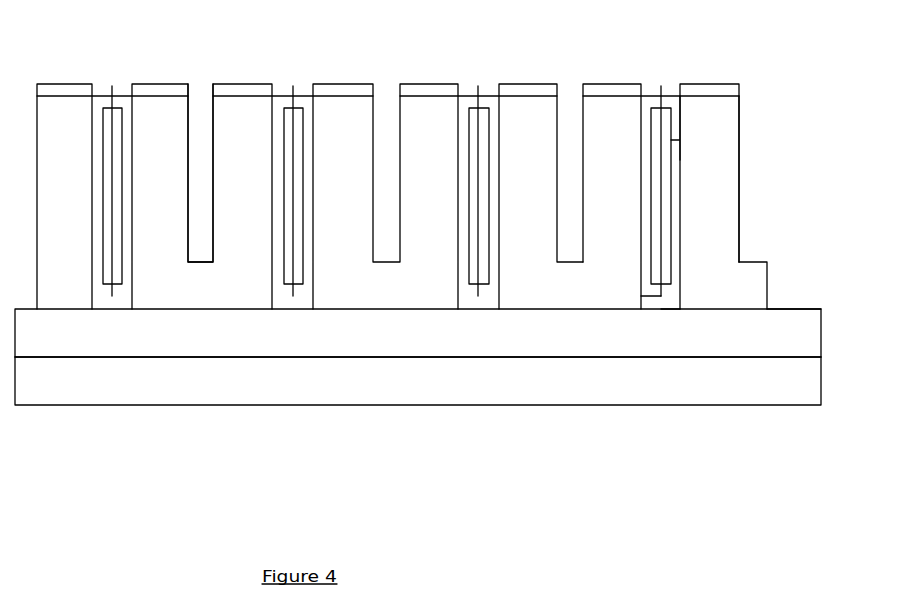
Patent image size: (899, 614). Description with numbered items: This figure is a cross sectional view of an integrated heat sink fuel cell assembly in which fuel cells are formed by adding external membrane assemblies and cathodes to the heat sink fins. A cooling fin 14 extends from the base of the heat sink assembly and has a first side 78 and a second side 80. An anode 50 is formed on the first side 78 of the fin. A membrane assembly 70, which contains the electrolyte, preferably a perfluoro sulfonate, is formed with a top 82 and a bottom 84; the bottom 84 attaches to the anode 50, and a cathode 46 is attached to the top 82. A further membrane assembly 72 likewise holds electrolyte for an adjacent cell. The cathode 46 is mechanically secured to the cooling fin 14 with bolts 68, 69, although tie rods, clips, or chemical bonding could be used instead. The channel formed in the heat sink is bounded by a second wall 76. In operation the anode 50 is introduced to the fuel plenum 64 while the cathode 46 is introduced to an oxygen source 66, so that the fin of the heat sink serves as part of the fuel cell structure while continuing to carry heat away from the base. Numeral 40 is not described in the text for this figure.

The substrate 40 is at (732, 393).
The membrane assembly 72 is at (798, 330).
The fuel plenum 64 is at (108, 325).
The cathode 46 is at (641, 87).
The bolt 68 is at (713, 93).
The second side 80 is at (740, 208).
The cooling fin 14 is at (768, 263).
The membrane assembly 70 is at (812, 262).
The bolt 69 is at (523, 96).
The oxygen source 66 is at (200, 70).
The second wall 76 is at (668, 190).
The top 82 is at (651, 107).
The bottom 84 is at (672, 140).
The first side 78 is at (680, 296).
The anode 50 is at (680, 297).